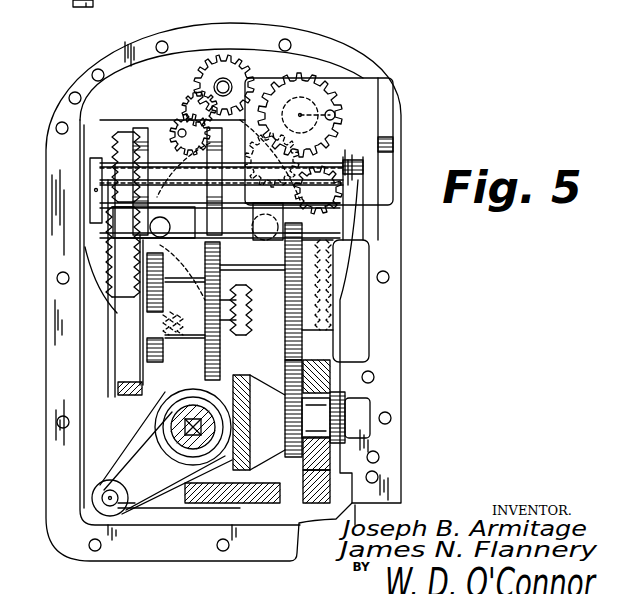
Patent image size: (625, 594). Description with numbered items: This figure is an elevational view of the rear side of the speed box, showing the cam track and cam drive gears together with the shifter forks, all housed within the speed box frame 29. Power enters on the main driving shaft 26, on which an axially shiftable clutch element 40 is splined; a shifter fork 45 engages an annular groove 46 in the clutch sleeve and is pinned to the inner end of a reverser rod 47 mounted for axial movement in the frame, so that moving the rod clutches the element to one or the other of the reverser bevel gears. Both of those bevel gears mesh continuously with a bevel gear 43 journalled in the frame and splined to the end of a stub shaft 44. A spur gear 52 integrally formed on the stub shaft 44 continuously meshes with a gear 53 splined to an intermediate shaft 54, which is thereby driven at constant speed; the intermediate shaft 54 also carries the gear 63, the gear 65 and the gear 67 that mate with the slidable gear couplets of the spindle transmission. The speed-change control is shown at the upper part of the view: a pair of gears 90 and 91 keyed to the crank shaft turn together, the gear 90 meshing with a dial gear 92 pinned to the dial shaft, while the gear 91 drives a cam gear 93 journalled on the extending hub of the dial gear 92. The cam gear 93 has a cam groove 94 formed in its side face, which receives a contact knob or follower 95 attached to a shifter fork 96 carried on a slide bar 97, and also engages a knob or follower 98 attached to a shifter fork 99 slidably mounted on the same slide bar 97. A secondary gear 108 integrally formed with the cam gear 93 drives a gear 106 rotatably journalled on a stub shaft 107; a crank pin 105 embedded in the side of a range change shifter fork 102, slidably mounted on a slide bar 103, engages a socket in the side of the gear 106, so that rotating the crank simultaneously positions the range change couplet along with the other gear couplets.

The speed box frame 29 is at (152, 577).
The gear 91 is at (218, 56).
The gear 106 is at (300, 70).
The cam gear 93 is at (177, 112).
The dial gear 92 is at (162, 125).
The gear 90 is at (200, 104).
The shifter fork 96 is at (135, 128).
The slide bar 103 is at (112, 158).
The shifter fork 99 is at (215, 157).
The cam groove 94 is at (198, 175).
The contact knob or follower 95 is at (168, 220).
The stub shaft 107 is at (317, 107).
The crank pin 105 is at (340, 108).
The secondary gear 108 is at (283, 150).
The range change shifter fork 102 is at (390, 135).
The slide bar 97 is at (103, 227).
The knob or follower 98 is at (280, 216).
The gear 65 is at (198, 297).
The gear 63 is at (243, 310).
The gear 67 is at (163, 361).
The annular groove 46 is at (200, 382).
The intermediate shaft 54 is at (323, 313).
The gear 53 is at (302, 350).
The clutch element 40 is at (170, 425).
The reverser rod 47 is at (112, 495).
The main driving shaft 26 is at (178, 452).
The bevel gear 43 is at (224, 493).
The shifter fork 45 is at (145, 508).
The spur gear 52 is at (290, 460).
The stub shaft 44 is at (322, 418).